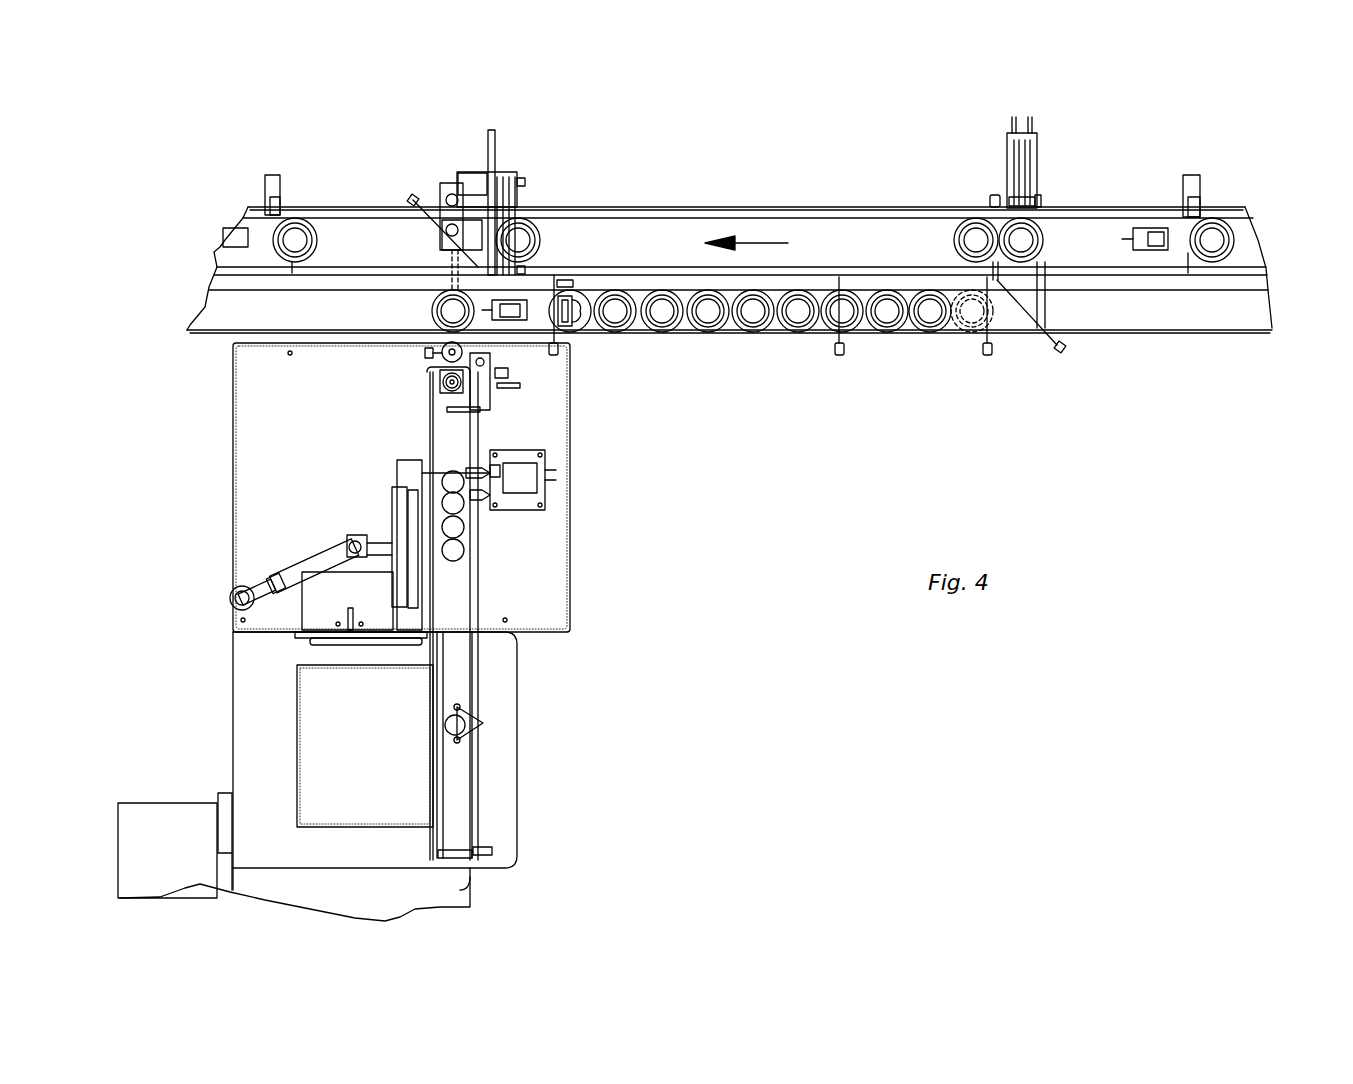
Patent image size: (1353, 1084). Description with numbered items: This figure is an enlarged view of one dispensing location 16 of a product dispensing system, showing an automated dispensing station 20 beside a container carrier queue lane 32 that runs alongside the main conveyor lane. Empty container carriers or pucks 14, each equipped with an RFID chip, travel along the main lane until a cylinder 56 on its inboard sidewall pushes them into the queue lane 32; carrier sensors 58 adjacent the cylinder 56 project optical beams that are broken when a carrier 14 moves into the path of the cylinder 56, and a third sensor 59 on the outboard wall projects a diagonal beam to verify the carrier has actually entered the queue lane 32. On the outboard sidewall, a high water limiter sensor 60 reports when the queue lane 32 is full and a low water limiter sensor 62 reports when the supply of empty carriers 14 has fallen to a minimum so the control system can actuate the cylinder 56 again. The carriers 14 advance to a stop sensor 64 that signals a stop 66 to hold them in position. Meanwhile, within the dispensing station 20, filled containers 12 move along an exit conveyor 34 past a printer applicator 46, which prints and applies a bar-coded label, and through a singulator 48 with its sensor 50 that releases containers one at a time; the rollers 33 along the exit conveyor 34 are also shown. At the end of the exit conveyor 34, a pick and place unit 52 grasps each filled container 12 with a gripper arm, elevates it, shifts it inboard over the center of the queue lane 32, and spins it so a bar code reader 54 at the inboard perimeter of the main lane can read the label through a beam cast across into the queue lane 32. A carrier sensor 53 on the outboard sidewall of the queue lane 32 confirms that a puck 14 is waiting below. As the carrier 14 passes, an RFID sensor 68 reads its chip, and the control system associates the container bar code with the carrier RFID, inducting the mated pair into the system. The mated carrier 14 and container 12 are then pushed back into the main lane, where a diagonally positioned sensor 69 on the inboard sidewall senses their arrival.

The container 12 is at (495, 563).
The container carrier 14 is at (892, 330).
The dispensing location 16 is at (603, 777).
The automated dispensing station 20 is at (517, 763).
The container carrier queue lane 32 is at (1178, 317).
The guide rollers 33 is at (466, 527).
The exit conveyor 34 is at (460, 595).
The printer applicator 46 is at (300, 727).
The singulator 48 is at (545, 495).
The sensor 50 is at (490, 465).
The pick and place unit 52 is at (520, 387).
The carrier sensor 53 is at (432, 353).
The bar code reader 54 is at (447, 203).
The cylinder 56 is at (1020, 133).
The carrier sensor 58 is at (992, 195).
The third sensor 59 is at (1064, 352).
The high water limiter sensor 60 is at (985, 357).
The low water limiter sensor 62 is at (838, 357).
The stop sensor 64 is at (560, 350).
The stop 66 is at (566, 282).
The RFID sensor 68 is at (520, 318).
The sensor 69 is at (407, 196).